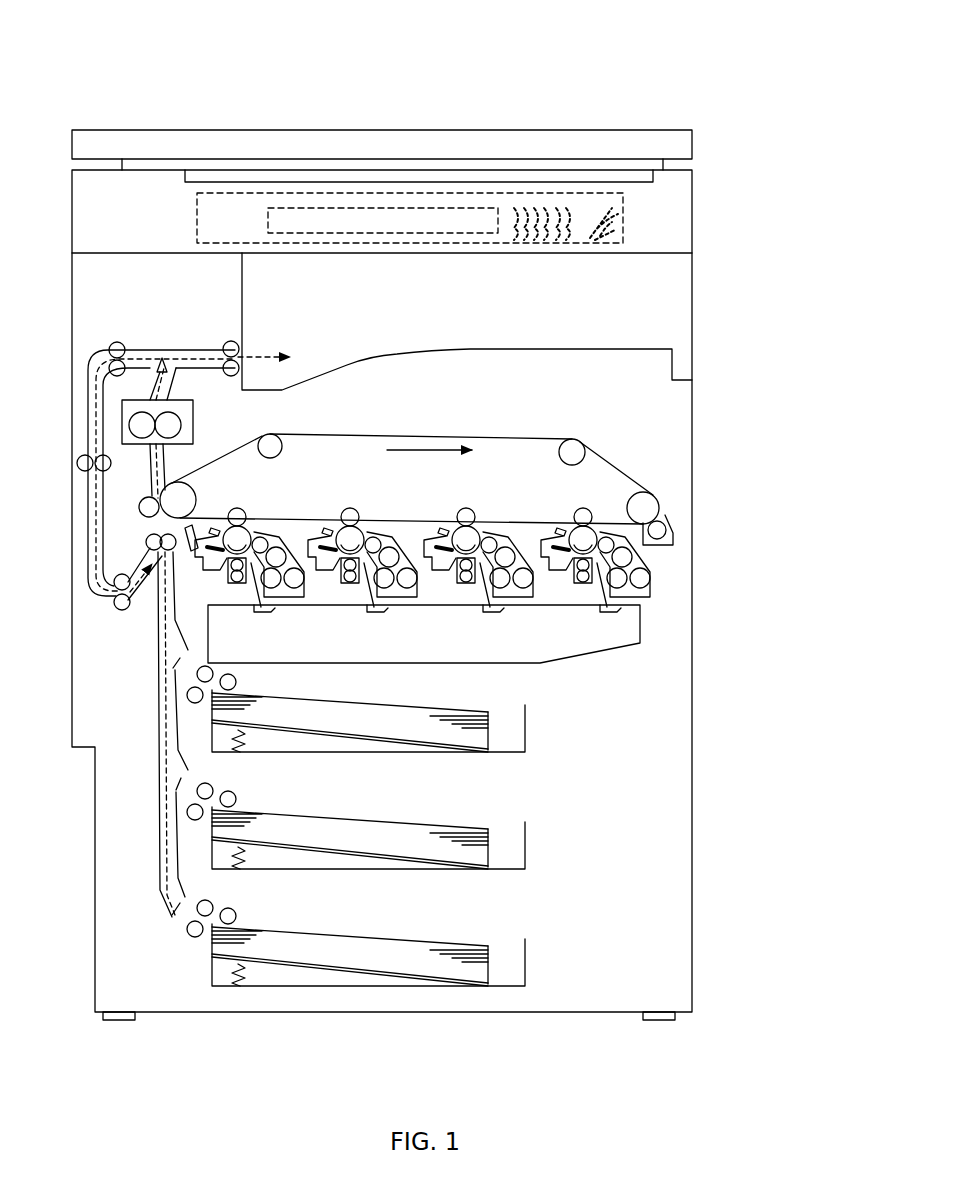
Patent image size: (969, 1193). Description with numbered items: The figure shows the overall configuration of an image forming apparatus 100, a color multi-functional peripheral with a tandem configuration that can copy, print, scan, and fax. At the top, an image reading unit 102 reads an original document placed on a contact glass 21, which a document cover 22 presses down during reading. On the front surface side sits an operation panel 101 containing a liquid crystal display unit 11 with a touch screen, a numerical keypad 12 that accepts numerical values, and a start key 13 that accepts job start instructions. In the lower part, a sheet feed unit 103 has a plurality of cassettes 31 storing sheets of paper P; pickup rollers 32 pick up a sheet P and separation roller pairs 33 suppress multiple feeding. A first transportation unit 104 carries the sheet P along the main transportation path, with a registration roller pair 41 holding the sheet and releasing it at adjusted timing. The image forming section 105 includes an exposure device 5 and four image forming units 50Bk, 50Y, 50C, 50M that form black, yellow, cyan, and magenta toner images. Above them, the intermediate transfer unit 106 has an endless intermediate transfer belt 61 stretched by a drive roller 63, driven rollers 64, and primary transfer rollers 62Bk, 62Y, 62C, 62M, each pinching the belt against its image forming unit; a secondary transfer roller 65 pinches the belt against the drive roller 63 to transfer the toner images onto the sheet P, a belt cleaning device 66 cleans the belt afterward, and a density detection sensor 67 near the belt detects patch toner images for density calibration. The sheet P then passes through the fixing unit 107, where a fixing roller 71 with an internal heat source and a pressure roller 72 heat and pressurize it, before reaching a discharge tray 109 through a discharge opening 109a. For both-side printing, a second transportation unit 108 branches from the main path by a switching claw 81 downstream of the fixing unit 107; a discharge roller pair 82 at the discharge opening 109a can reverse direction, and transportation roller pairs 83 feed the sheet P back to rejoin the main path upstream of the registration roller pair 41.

The image forming apparatus 100 is at (100, 122).
The operation panel 101 is at (190, 222).
The image reading unit 102 is at (676, 258).
The sheet feed unit 103 is at (540, 733).
The first transportation unit 104 is at (152, 626).
The image forming section 105 is at (662, 594).
The intermediate transfer unit 106 is at (630, 445).
The fixing unit 107 is at (198, 410).
The second transportation unit 108 is at (84, 366).
The discharge tray 109 is at (378, 360).
The discharge opening 109a is at (244, 345).
The liquid crystal display unit 11 is at (440, 236).
The numerical keypad 12 is at (538, 240).
The start key 13 is at (600, 240).
The contact glass 21 is at (455, 176).
The document cover 22 is at (572, 146).
The cassette 31 is at (527, 752).
The pickup roller 32 is at (237, 681).
The separation roller pair 33 is at (194, 704).
The registration roller pair 41 is at (146, 542).
The exposure device 5 is at (640, 632).
The image forming unit 50Bk is at (234, 592).
The image forming unit 50Y is at (347, 592).
The image forming unit 50C is at (464, 592).
The image forming unit 50M is at (580, 592).
The intermediate transfer belt 61 is at (390, 434).
The primary transfer roller 62Bk is at (244, 512).
The primary transfer roller 62Y is at (356, 514).
The primary transfer roller 62C is at (473, 514).
The primary transfer roller 62M is at (576, 512).
The drive roller 63 is at (178, 482).
The driven roller 64 is at (282, 450).
The secondary transfer roller 65 is at (141, 500).
The belt cleaning device 66 is at (666, 530).
The density detection sensor 67 is at (190, 552).
The fixing roller 71 is at (170, 425).
The pressure roller 72 is at (138, 425).
The switching claw 81 is at (163, 356).
The discharge roller pair 82 is at (229, 340).
The transportation roller pair 83 is at (117, 342).
The sheet P is at (394, 705).